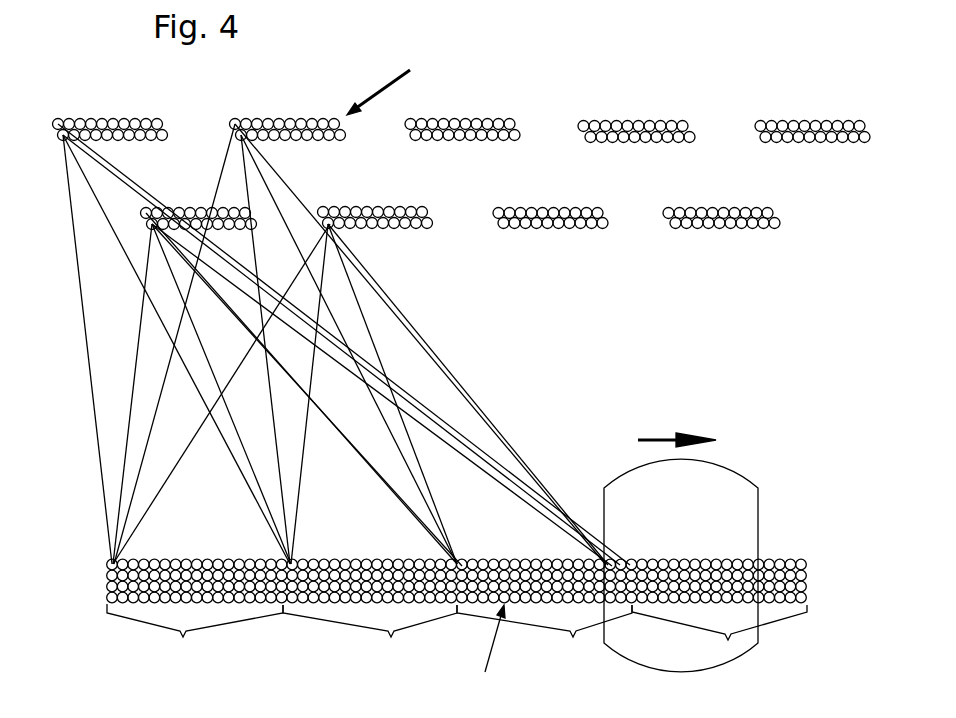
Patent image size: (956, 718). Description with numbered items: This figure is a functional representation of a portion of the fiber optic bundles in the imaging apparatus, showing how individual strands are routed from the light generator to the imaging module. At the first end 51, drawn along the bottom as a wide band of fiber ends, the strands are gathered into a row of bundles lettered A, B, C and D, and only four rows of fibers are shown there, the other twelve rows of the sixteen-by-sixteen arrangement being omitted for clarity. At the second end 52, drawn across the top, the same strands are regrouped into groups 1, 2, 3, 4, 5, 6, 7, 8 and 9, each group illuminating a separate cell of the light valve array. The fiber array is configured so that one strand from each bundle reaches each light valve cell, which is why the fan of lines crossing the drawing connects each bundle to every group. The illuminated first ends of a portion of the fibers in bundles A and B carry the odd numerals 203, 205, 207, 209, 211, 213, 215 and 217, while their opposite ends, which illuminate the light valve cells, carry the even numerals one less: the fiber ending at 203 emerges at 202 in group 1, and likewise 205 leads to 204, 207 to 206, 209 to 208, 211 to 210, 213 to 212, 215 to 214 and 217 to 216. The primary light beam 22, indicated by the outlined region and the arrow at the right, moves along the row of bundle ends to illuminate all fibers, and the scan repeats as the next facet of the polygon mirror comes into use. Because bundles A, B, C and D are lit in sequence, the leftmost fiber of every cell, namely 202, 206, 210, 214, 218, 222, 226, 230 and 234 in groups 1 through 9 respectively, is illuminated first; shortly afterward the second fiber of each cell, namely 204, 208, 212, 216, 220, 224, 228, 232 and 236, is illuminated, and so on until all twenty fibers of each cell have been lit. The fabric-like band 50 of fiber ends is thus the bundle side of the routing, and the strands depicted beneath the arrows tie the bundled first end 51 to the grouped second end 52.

The group 1 is at (110, 102).
The group 2 is at (199, 217).
The group 3 is at (288, 102).
The group 4 is at (375, 215).
The group 5 is at (462, 102).
The group 6 is at (550, 217).
The group 7 is at (646, 103).
The group 8 is at (721, 217).
The group 9 is at (812, 103).
The leftmost fiber of cell 202 is at (60, 122).
The second fiber of cell 204 is at (68, 133).
The leftmost fiber of cell 206 is at (150, 212).
The second fiber of cell 208 is at (157, 222).
The leftmost fiber of cell 210 is at (238, 122).
The second fiber of cell 212 is at (246, 133).
The leftmost fiber of cell 214 is at (327, 211).
The second fiber of cell 216 is at (334, 222).
The leftmost fiber of cell 218 is at (410, 122).
The second fiber of cell 220 is at (418, 133).
The leftmost fiber of cell 222 is at (500, 212).
The second fiber of cell 224 is at (505, 222).
The leftmost fiber of cell 226 is at (585, 124).
The second fiber of cell 228 is at (592, 135).
The leftmost fiber of cell 230 is at (670, 212).
The second fiber of cell 232 is at (678, 222).
The leftmost fiber of cell 234 is at (762, 124).
The second fiber of cell 236 is at (768, 135).
The first end of fiber 203 is at (110, 563).
The first end of fiber 205 is at (290, 563).
The first end of fiber 207 is at (110, 575).
The first end of fiber 209 is at (290, 575).
The first end of fiber 211 is at (110, 586).
The first end of fiber 213 is at (290, 586).
The first end of fiber 215 is at (110, 597).
The first end of fiber 217 is at (290, 597).
The fabric 50 is at (113, 628).
The first end 51 is at (482, 654).
The second end 52 is at (380, 86).
The primary light beam 22 is at (758, 500).